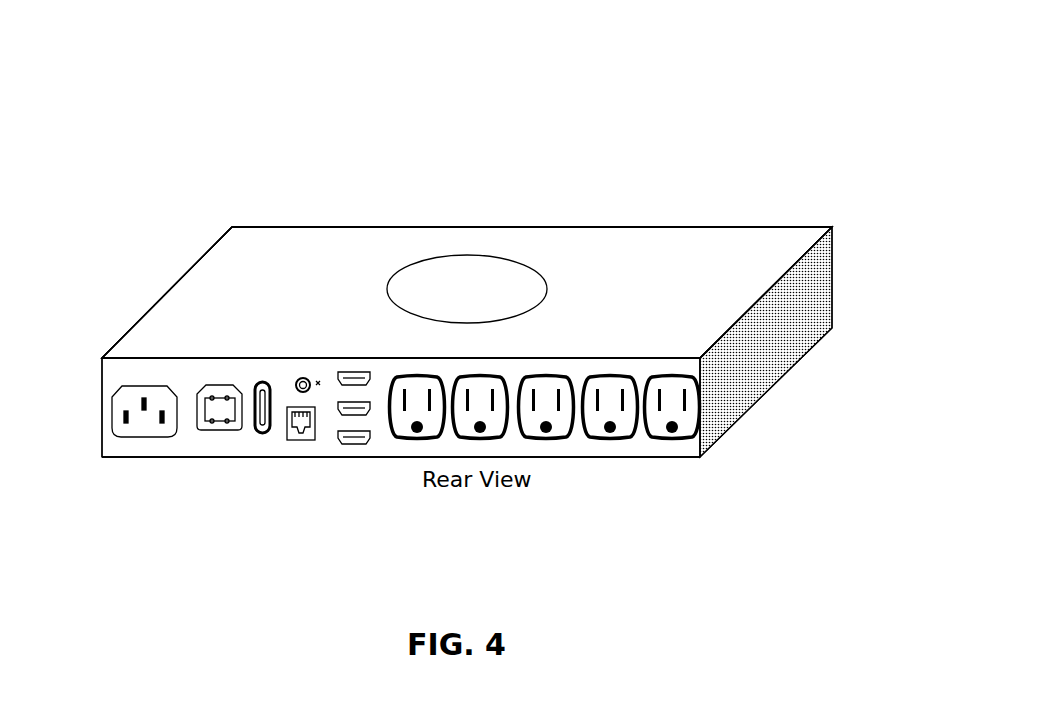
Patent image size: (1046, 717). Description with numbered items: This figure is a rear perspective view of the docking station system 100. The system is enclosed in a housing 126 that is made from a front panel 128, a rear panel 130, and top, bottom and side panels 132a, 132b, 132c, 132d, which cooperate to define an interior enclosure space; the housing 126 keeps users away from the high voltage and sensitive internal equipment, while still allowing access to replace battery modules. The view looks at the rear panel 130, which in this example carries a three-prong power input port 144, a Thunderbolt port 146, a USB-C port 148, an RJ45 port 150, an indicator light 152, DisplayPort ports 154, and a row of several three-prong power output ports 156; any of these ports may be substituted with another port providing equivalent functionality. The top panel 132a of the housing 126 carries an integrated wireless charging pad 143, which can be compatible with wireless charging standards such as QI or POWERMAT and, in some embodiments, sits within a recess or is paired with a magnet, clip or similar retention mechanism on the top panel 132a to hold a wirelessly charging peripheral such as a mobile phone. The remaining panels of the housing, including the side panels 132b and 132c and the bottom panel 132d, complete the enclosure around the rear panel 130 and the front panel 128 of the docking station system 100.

The docking station system 100 is at (745, 98).
The housing 126 is at (223, 230).
The front panel 128 is at (781, 226).
The rear panel 130 is at (690, 453).
The top panel 132a is at (737, 278).
The side panel 132b is at (815, 345).
The side panel 132c is at (162, 293).
The bottom panel 132d is at (105, 460).
The integrated wireless charging pad 143 is at (488, 299).
The three-prong power input port 144 is at (110, 428).
The Thunderbolt port 146 is at (199, 437).
The USB-C port 148 is at (262, 435).
The RJ45 port 150 is at (302, 444).
The indicator light 152 is at (295, 382).
The DisplayPort ports 154 is at (353, 448).
The three-prong power output ports 156 is at (553, 433).